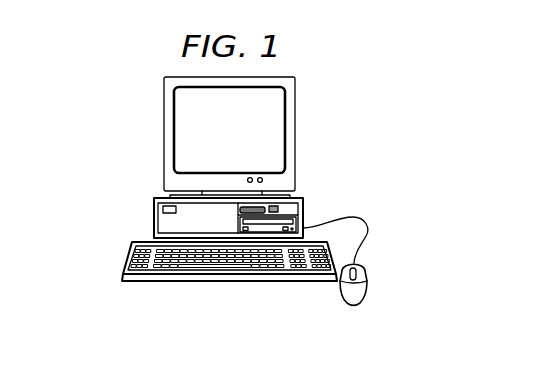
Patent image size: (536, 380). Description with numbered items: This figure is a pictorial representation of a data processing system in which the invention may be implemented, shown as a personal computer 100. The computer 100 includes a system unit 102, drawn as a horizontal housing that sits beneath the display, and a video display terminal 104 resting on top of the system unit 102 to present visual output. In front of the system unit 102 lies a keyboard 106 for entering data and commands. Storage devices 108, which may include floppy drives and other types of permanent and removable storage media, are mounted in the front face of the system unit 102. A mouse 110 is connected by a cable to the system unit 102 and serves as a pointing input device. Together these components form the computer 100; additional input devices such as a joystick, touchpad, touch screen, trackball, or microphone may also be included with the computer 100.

The computer 100 is at (103, 116).
The system unit 102 is at (153, 214).
The video display terminal 104 is at (295, 130).
The keyboard 106 is at (150, 281).
The storage devices 108 is at (303, 212).
The mouse 110 is at (353, 306).